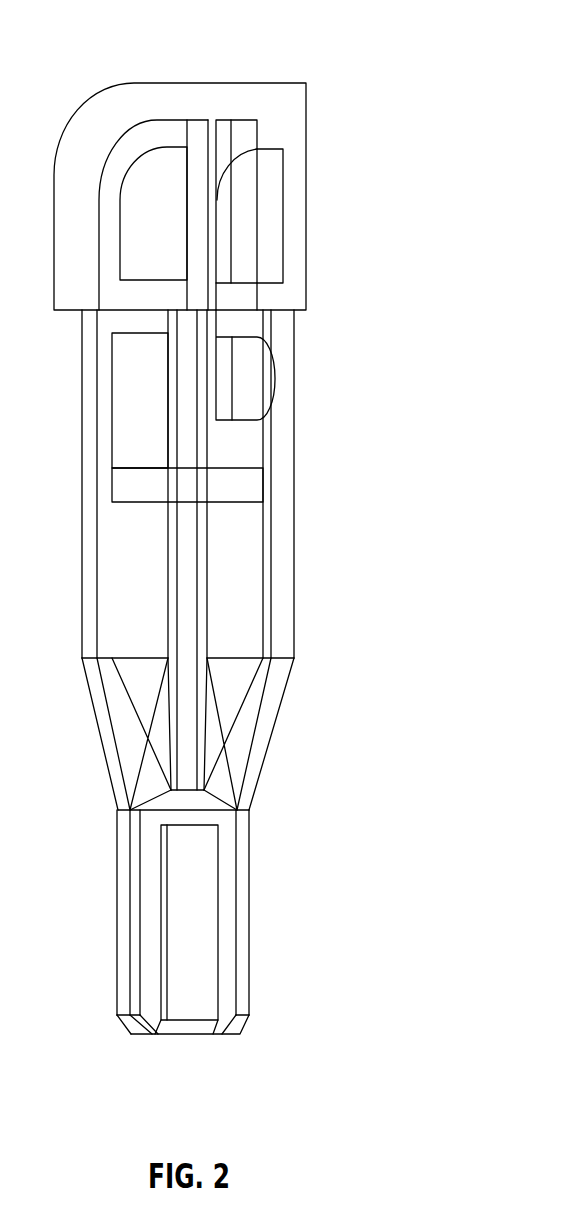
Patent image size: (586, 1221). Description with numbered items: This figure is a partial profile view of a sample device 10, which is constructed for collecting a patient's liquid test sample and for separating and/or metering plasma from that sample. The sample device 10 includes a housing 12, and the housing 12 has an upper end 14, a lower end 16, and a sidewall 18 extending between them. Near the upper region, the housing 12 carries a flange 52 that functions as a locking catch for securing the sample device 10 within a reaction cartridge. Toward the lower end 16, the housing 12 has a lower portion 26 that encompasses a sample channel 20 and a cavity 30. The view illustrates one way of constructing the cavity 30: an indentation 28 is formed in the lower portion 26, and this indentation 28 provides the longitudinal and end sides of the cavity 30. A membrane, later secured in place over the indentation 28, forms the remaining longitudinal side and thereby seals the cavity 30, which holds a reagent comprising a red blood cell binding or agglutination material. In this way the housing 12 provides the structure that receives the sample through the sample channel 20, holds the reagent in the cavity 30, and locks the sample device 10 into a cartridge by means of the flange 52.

The sample device 10 is at (415, 122).
The housing 12 is at (308, 218).
The upper end 14 is at (154, 82).
The lower end 16 is at (137, 1036).
The sidewall 18 is at (295, 458).
The sample channel 20 is at (192, 1036).
The lower portion 26 is at (116, 857).
The indentation 28 is at (177, 995).
The cavity 30 is at (197, 913).
The flange 52 is at (252, 392).